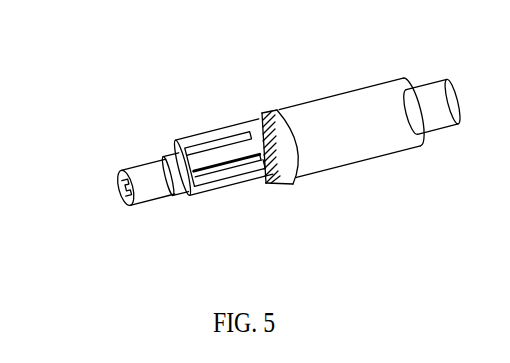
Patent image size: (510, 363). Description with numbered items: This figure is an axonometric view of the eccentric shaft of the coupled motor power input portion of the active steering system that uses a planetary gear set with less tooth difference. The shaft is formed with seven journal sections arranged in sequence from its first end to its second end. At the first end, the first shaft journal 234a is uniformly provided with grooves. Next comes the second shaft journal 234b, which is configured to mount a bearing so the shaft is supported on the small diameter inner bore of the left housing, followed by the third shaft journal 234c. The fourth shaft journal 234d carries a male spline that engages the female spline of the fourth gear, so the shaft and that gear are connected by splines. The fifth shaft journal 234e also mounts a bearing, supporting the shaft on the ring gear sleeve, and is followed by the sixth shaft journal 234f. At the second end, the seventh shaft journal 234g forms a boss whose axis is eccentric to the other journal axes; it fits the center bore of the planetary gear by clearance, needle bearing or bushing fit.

The first shaft journal 234a is at (101, 113).
The second shaft journal 234b is at (119, 200).
The third shaft journal 234c is at (235, 183).
The fourth shaft journal 234d is at (194, 103).
The fifth shaft journal 234e is at (333, 178).
The sixth shaft journal 234f is at (323, 98).
The seventh shaft journal 234g is at (390, 78).